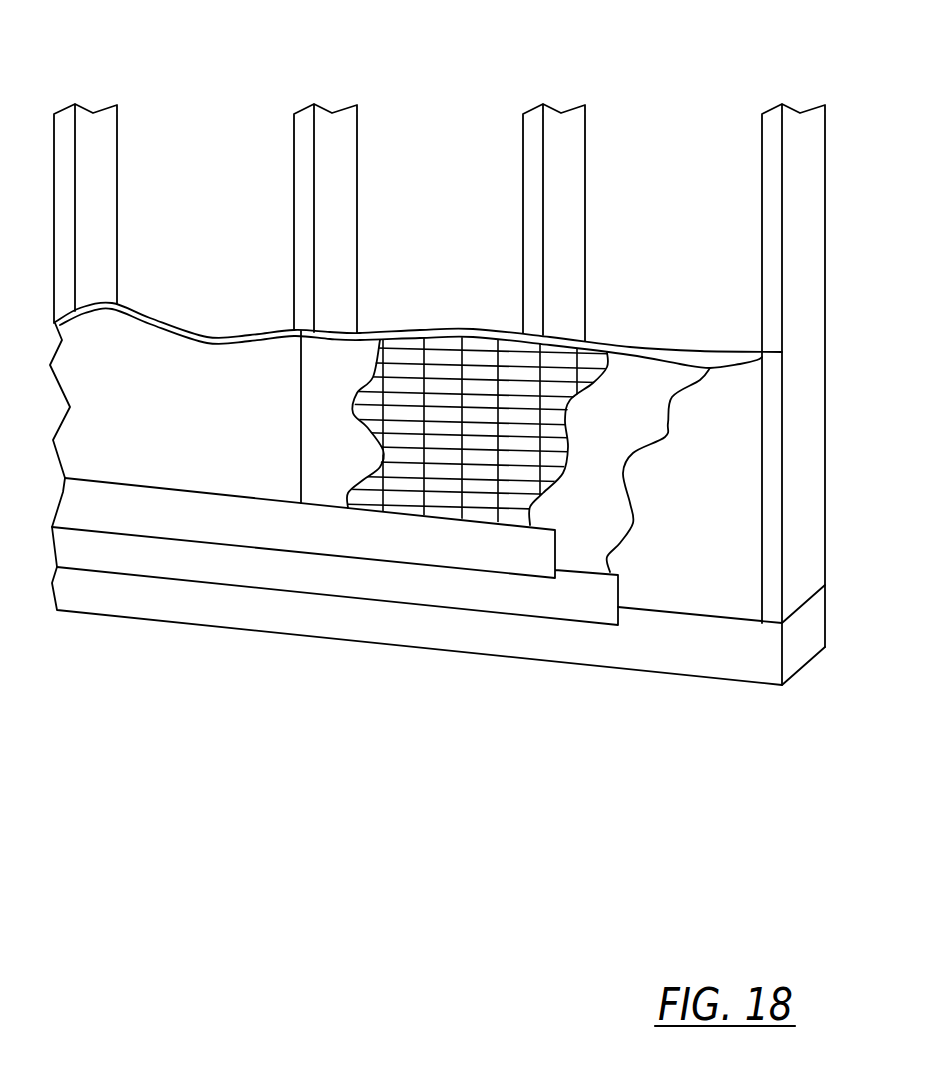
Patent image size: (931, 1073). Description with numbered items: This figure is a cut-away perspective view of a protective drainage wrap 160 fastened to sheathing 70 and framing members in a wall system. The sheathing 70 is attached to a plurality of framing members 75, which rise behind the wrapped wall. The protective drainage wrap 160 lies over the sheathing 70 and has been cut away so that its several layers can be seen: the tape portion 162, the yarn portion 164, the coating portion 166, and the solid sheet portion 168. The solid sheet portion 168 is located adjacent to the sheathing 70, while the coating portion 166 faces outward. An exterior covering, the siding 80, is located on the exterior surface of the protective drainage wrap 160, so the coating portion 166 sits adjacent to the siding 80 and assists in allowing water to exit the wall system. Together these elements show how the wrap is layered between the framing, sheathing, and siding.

The framing member 75 is at (106, 104).
The sheathing 70 is at (672, 516).
The siding 80 is at (210, 527).
The coating portion 166 is at (310, 391).
The protective drainage wrap 160 is at (486, 314).
The tape portion 162 is at (395, 357).
The yarn portion 164 is at (460, 355).
The solid sheet portion 168 is at (577, 477).